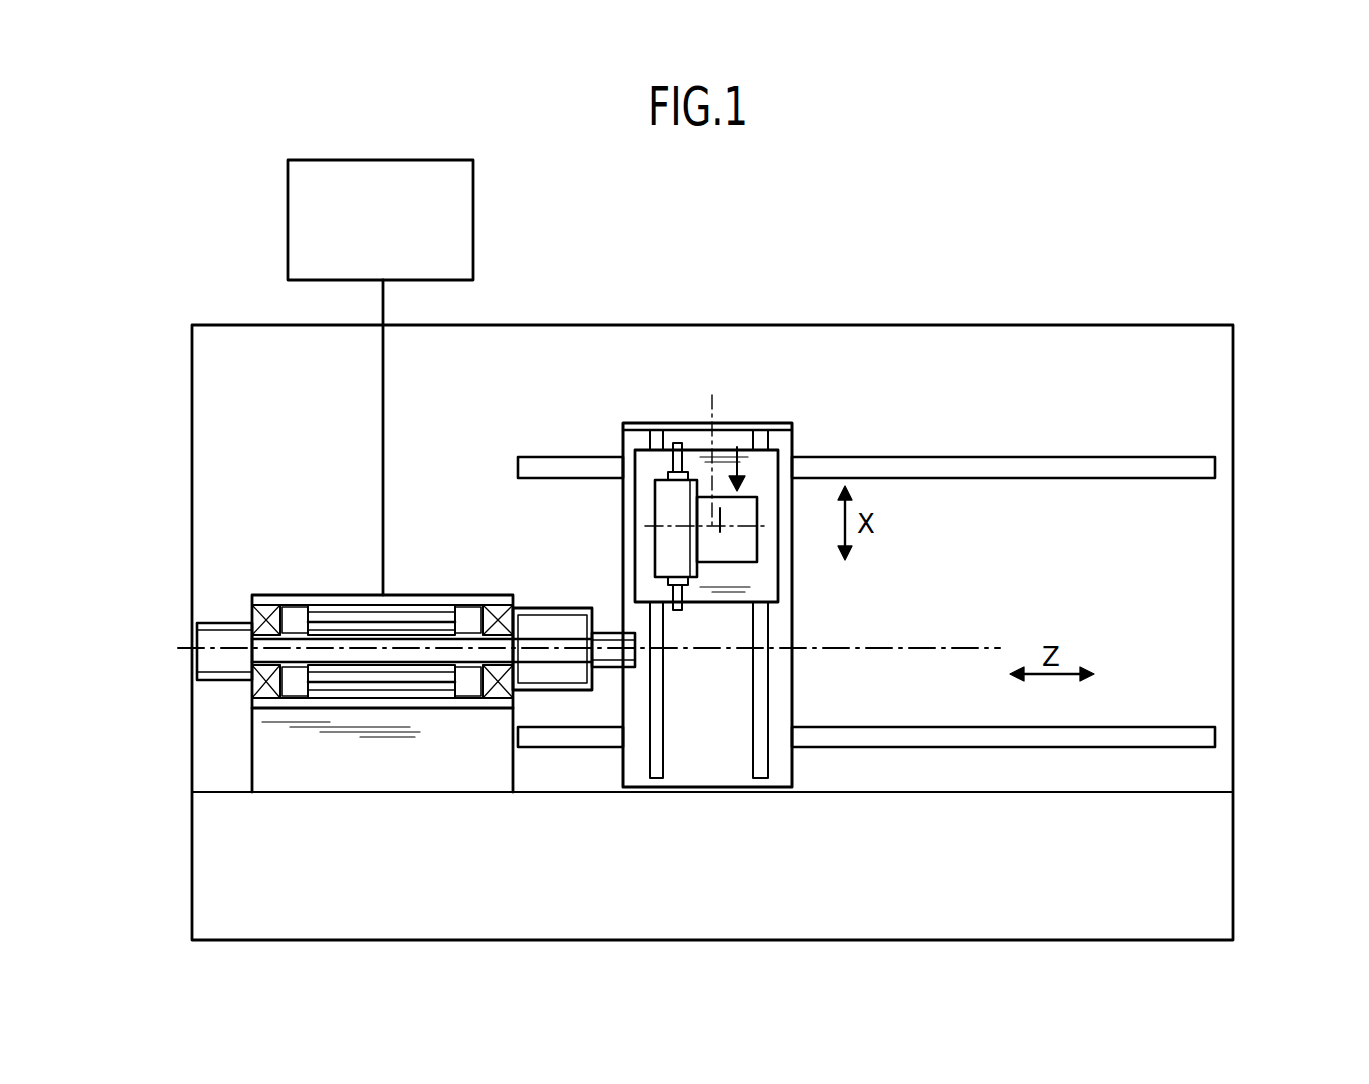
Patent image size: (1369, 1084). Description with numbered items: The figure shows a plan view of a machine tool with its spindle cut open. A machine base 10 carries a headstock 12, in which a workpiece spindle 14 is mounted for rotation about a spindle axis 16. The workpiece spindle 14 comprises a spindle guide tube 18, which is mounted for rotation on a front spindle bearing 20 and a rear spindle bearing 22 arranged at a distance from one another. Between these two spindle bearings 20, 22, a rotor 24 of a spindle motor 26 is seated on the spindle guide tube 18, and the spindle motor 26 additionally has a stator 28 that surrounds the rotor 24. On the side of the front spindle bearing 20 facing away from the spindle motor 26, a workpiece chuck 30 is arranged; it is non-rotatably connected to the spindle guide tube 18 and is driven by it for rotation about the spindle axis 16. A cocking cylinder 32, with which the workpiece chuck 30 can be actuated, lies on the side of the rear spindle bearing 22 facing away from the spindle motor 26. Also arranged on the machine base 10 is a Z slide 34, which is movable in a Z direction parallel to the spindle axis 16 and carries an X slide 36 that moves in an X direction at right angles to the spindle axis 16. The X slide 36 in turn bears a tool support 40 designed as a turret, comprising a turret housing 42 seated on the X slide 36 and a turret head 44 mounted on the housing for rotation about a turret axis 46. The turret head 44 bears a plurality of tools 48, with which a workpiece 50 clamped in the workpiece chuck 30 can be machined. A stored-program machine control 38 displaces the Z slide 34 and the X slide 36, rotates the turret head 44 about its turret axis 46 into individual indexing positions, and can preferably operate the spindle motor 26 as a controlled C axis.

The machine base 10 is at (1247, 838).
The headstock 12 is at (372, 750).
The workpiece spindle 14 is at (407, 577).
The spindle axis 16 is at (943, 647).
The spindle guide tube 18 is at (467, 670).
The front spindle bearing 20 is at (481, 688).
The rear spindle bearing 22 is at (268, 700).
The rotor 24 is at (340, 633).
The spindle motor 26 is at (288, 620).
The stator 28 is at (373, 608).
The workpiece chuck 30 is at (553, 680).
The cocking cylinder 32 is at (233, 633).
The Z slide 34 is at (782, 733).
The X slide 36 is at (773, 472).
The stored-program machine control 38 is at (365, 231).
The tool support 40 is at (738, 447).
The turret housing 42 is at (735, 548).
The turret head 44 is at (655, 508).
The turret axis 46 is at (712, 395).
The tools 48 is at (667, 472).
The workpiece 50 is at (630, 668).